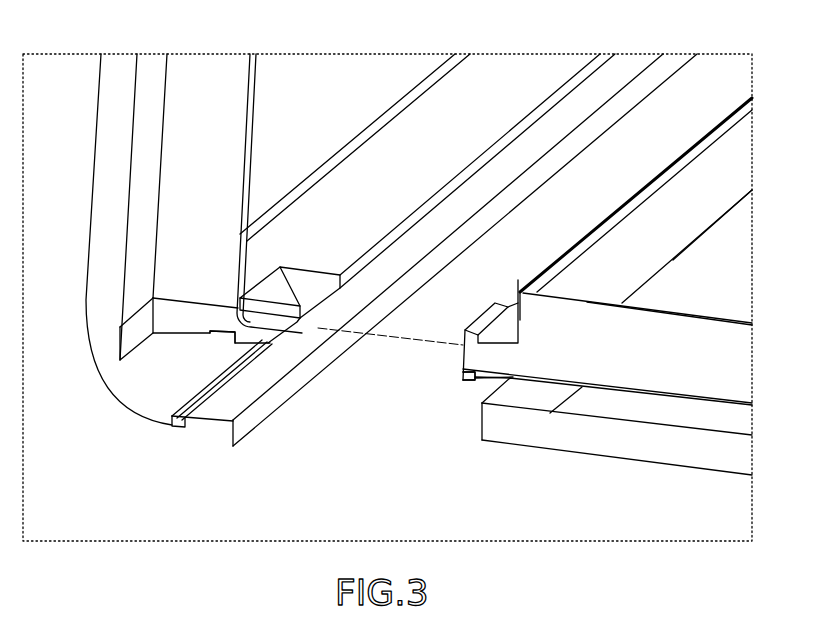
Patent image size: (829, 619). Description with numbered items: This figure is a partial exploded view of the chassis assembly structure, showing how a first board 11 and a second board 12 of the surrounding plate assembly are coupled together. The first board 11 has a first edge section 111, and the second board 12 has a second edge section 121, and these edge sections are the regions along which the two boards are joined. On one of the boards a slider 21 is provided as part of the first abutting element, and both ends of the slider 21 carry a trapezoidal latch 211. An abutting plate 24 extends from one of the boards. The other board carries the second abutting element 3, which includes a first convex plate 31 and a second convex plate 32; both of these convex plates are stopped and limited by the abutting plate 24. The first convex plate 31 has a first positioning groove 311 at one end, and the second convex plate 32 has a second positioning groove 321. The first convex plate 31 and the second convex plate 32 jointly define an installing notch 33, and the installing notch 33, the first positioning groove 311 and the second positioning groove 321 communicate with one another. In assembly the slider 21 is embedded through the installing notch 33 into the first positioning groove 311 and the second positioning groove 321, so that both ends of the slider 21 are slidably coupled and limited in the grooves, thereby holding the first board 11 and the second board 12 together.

The first board 11 is at (632, 286).
The first edge section 111 is at (700, 240).
The second board 12 is at (280, 105).
The second edge section 121 is at (381, 117).
The slider 21 is at (463, 345).
The trapezoidal latch 211 is at (483, 310).
The abutting plate 24 is at (680, 197).
The second abutting element 3 is at (497, 88).
The first convex plate 31 is at (475, 163).
The first positioning groove 311 is at (217, 337).
The second convex plate 32 is at (403, 277).
The second positioning groove 321 is at (187, 420).
The installing notch 33 is at (313, 273).